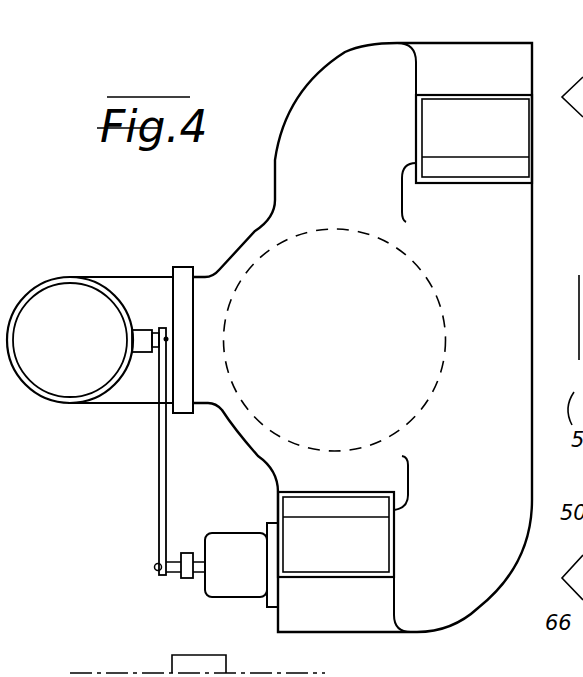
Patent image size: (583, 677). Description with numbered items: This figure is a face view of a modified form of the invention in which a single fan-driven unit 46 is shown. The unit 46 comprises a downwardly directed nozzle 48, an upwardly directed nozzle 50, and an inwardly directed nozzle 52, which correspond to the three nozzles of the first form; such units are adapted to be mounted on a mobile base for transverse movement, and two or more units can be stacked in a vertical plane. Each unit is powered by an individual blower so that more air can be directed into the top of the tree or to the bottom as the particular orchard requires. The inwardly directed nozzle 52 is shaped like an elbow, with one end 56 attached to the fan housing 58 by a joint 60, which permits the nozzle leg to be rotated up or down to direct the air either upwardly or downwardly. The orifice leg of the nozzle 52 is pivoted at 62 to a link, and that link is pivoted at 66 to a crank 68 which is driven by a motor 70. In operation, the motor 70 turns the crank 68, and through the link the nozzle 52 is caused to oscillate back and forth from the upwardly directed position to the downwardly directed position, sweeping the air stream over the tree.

The fan-driven unit 46 is at (200, 206).
The downwardly directed nozzle 48 is at (416, 142).
The upwardly directed nozzle 50 is at (395, 558).
The inwardly directed nozzle 52 is at (62, 278).
The end of nozzle 56 is at (119, 277).
The fan housing 58 is at (250, 229).
The joint 60 is at (186, 267).
The pivot 62 is at (148, 352).
The pivot 66 is at (154, 567).
The crank 68 is at (186, 580).
The motor 70 is at (230, 540).